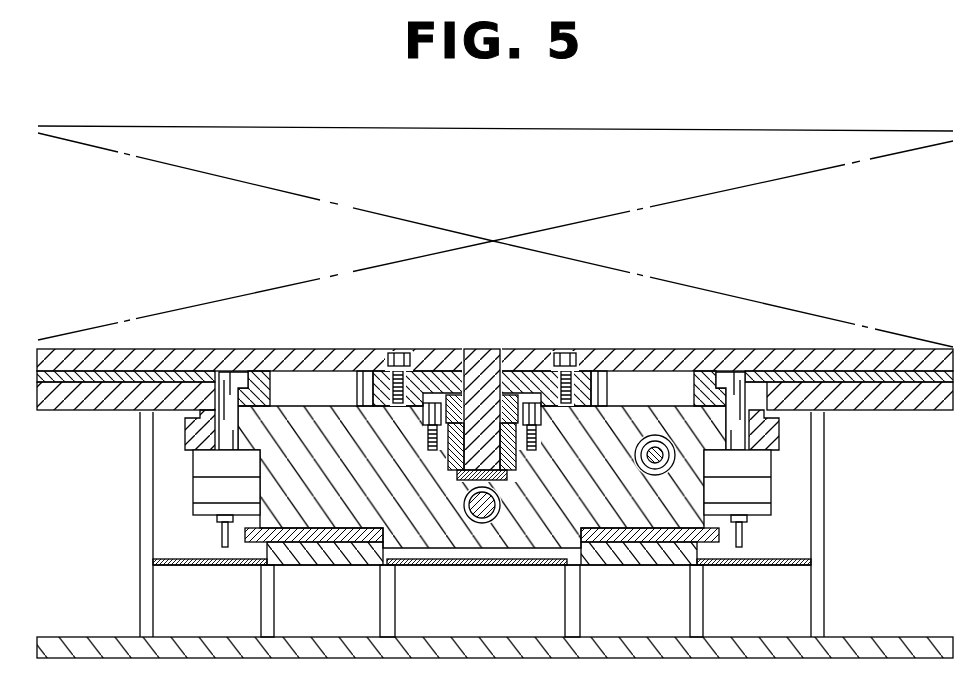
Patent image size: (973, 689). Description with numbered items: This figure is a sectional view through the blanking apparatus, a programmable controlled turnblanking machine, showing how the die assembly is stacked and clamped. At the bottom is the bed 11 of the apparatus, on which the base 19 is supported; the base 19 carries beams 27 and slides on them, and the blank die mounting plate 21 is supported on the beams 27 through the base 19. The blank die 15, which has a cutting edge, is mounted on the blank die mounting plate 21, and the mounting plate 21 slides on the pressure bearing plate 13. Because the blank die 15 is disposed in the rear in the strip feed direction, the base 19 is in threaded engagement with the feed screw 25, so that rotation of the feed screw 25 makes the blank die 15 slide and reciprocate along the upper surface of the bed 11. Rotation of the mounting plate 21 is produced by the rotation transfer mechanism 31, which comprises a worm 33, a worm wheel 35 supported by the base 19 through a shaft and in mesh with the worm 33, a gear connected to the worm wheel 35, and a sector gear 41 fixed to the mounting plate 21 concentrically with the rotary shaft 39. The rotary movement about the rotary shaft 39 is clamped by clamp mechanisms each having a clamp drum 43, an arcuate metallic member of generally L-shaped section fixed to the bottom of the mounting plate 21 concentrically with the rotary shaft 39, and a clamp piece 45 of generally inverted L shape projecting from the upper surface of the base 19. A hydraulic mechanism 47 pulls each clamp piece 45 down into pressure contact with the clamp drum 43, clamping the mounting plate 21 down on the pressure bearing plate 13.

The bed 11 is at (894, 640).
The pressure bearing plate 13 is at (79, 411).
The blank die 15 is at (734, 99).
The base 19 is at (530, 536).
The blank die mounting plate 21 is at (832, 360).
The feed screw 25 is at (482, 524).
The beams 27 is at (312, 553).
The rotation transfer mechanism 31 is at (503, 366).
The worm 33 is at (666, 470).
The worm wheel 35 is at (650, 437).
The rotary shaft 39 is at (480, 349).
The sector gear 41 is at (599, 385).
The clamp drum 43 is at (259, 373).
The clamp piece 45 is at (235, 373).
The hydraulic mechanism 47 is at (212, 497).